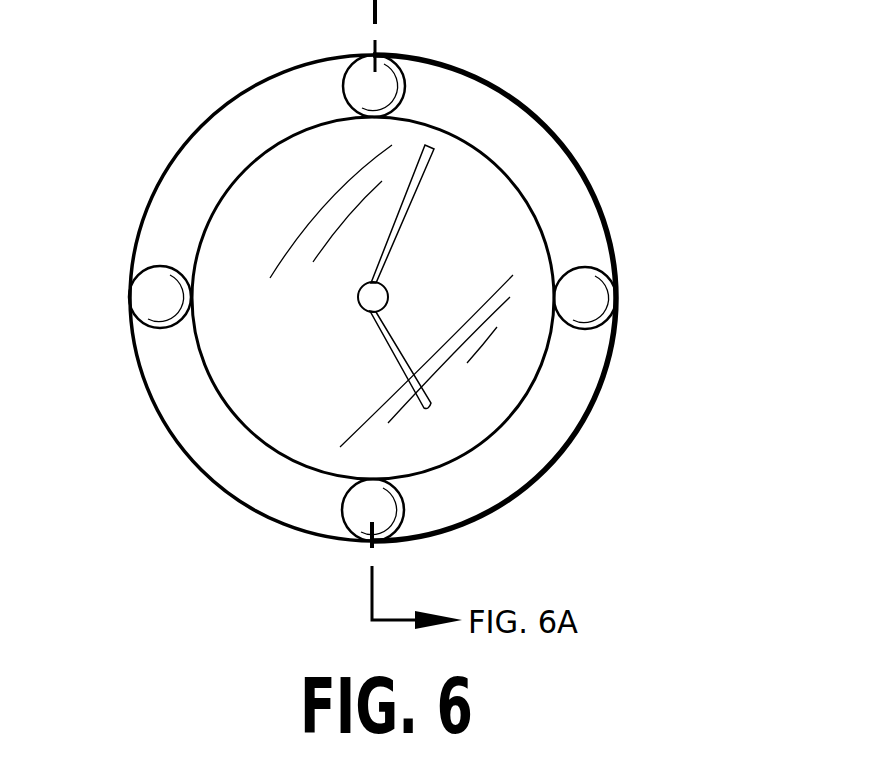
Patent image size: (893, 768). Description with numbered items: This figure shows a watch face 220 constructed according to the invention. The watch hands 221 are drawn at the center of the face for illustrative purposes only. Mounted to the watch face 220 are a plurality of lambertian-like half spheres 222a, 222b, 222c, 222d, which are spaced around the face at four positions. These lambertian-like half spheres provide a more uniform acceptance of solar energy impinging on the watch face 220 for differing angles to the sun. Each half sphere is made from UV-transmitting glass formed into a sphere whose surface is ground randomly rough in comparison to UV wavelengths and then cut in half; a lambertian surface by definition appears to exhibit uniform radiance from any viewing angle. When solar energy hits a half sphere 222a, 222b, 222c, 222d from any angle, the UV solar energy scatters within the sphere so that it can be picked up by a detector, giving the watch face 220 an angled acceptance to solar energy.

The watch face 220 is at (658, 530).
The watch hands 221 is at (395, 342).
The lambertian-like half sphere 222a is at (362, 72).
The lambertian-like half sphere 222b is at (146, 290).
The lambertian-like half sphere 222c is at (360, 516).
The lambertian-like half sphere 222d is at (590, 298).